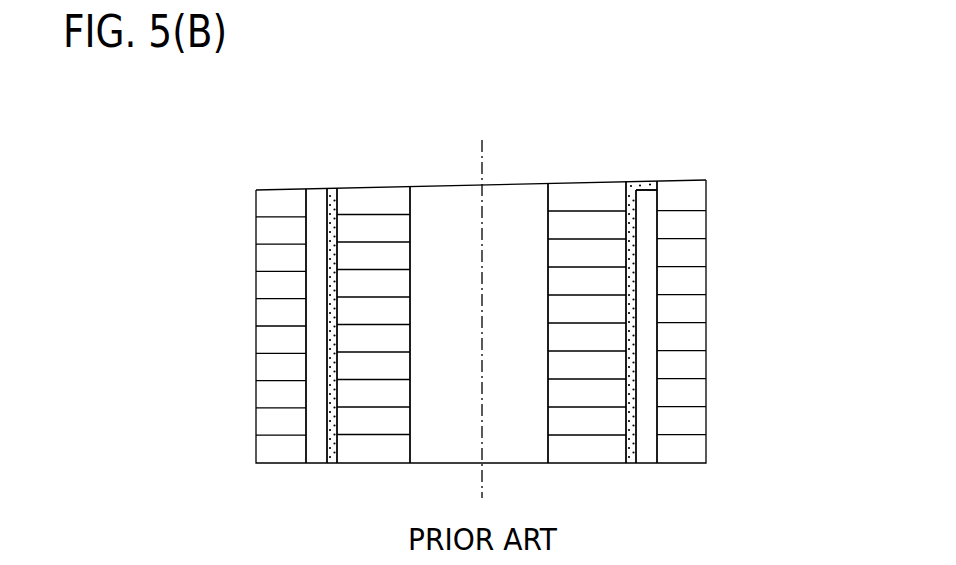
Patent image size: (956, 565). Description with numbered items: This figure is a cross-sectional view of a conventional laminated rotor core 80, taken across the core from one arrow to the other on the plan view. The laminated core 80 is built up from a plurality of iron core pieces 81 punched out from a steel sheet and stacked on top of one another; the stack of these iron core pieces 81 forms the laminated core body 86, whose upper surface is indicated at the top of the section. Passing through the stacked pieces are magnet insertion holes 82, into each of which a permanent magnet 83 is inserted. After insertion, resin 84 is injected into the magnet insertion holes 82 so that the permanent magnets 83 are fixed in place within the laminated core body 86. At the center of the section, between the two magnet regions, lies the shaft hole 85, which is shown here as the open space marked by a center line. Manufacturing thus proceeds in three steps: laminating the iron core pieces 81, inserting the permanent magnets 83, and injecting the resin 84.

The laminated rotor core 80 is at (754, 108).
The iron core piece 81 is at (695, 282).
The magnet insertion hole 82 is at (335, 228).
The permanent magnet 83 is at (315, 237).
The resin 84 is at (337, 200).
The shaft hole 85 is at (425, 218).
The laminated core body 86 is at (709, 170).